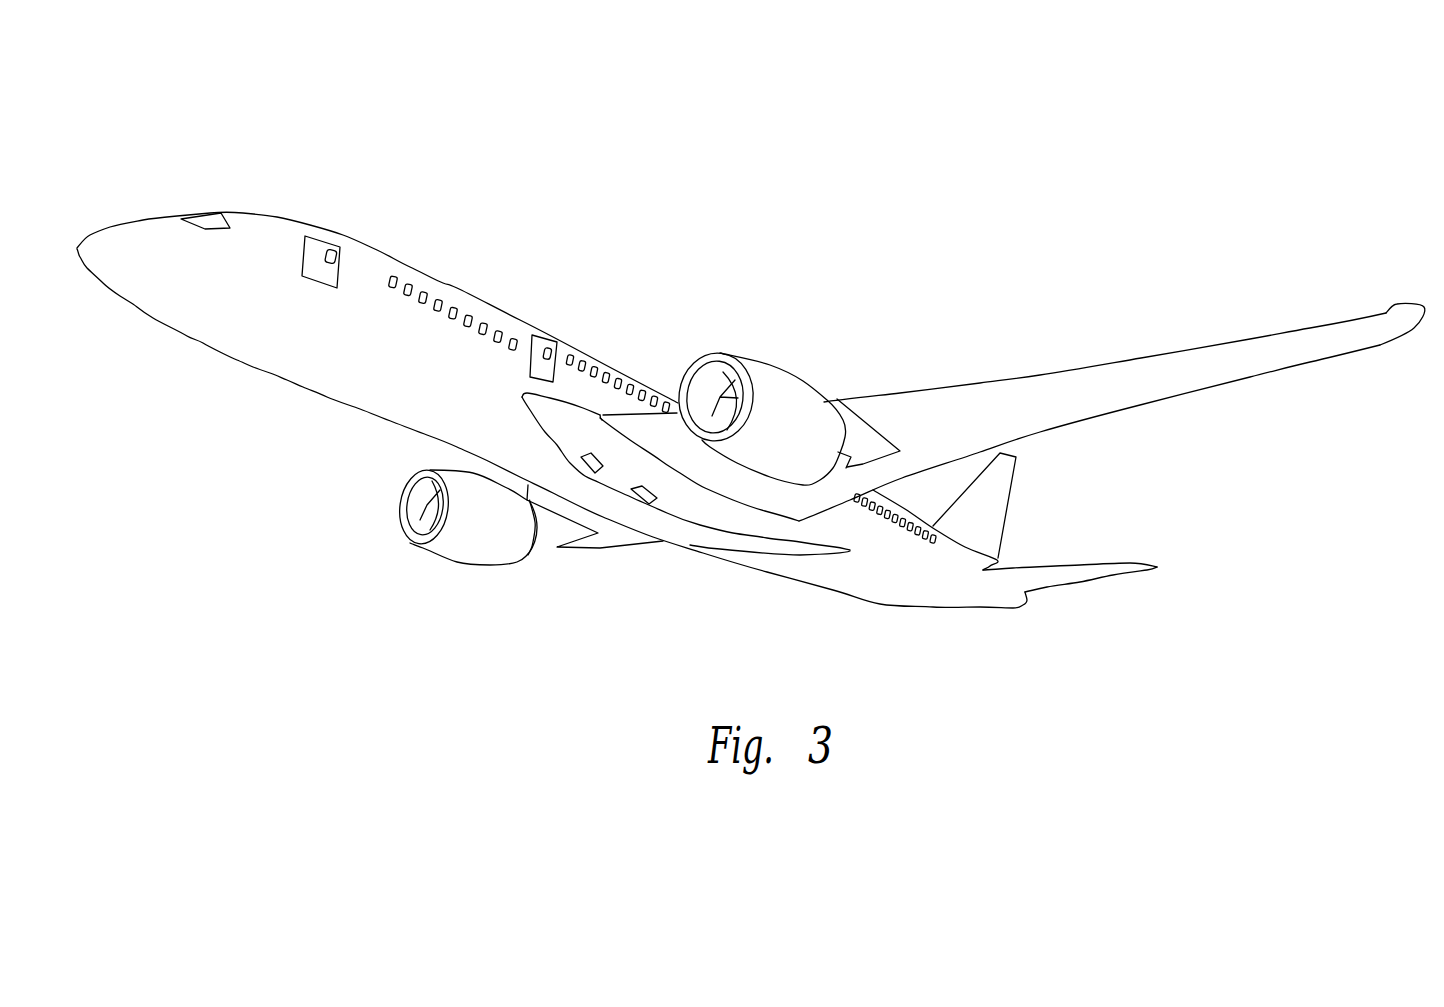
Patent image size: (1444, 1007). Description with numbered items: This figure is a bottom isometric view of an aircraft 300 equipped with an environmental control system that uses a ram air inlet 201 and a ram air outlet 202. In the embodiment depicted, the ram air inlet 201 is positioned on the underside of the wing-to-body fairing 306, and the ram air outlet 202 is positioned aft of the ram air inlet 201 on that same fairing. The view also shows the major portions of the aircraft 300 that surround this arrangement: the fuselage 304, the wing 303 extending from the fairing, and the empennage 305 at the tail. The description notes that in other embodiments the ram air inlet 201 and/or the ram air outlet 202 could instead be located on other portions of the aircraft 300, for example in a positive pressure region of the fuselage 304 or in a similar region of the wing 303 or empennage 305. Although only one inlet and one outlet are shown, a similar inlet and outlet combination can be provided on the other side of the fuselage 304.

The aircraft 300 is at (751, 385).
The wing 303 is at (1083, 372).
The fuselage 304 is at (273, 213).
The empennage 305 is at (1000, 558).
The wing-to-body fairing 306 is at (581, 421).
The ram air inlet 201 is at (584, 472).
The ram air outlet 202 is at (640, 501).